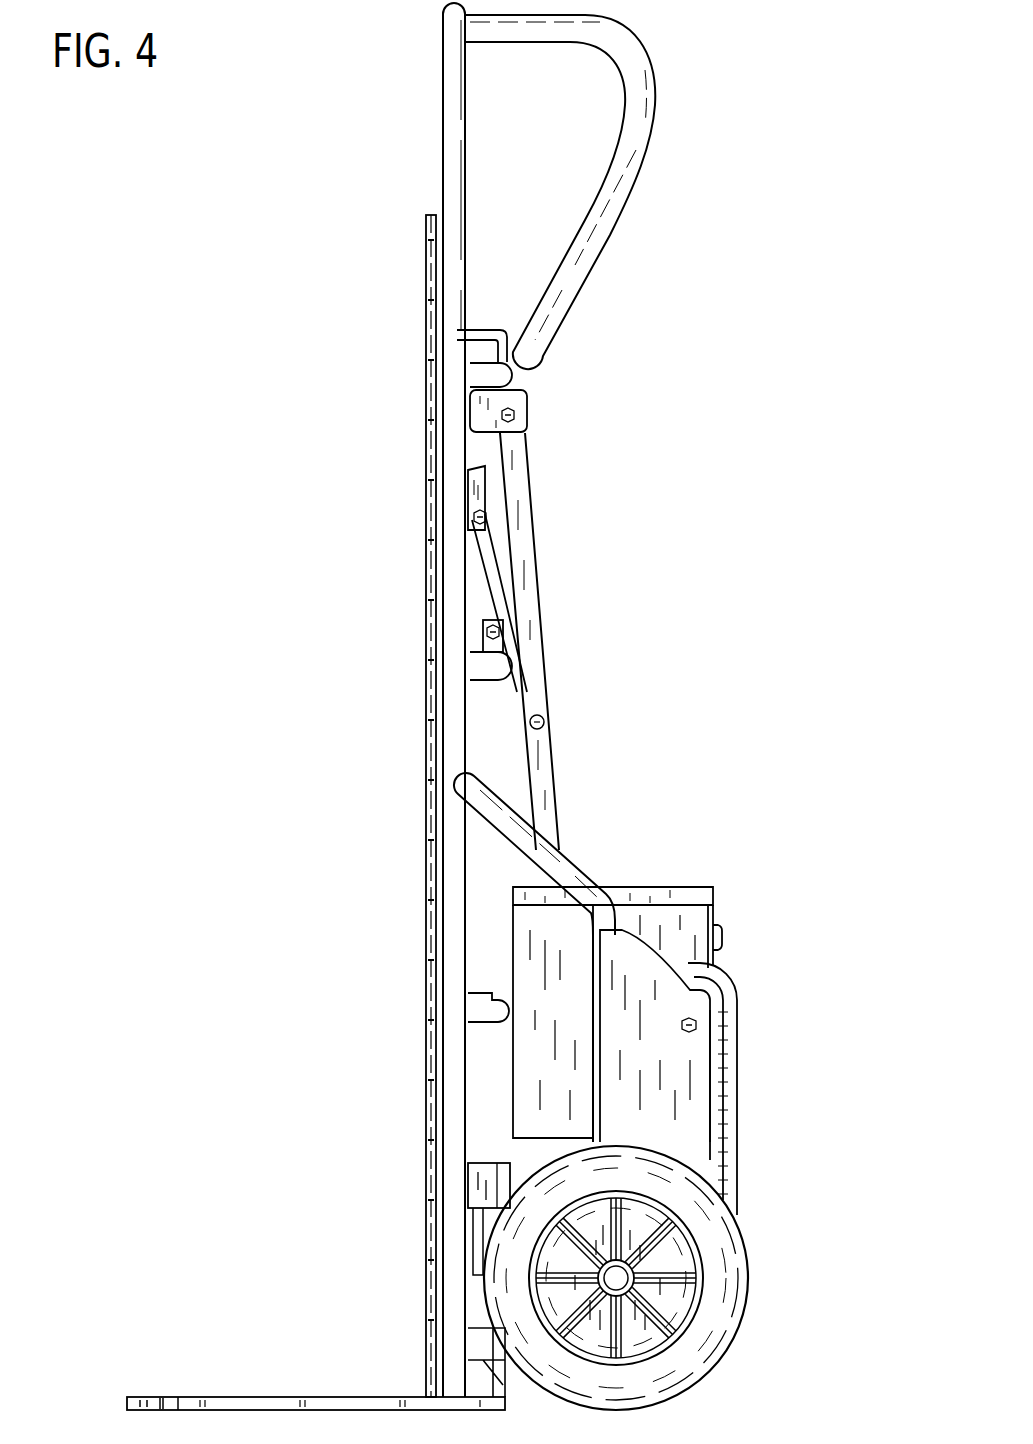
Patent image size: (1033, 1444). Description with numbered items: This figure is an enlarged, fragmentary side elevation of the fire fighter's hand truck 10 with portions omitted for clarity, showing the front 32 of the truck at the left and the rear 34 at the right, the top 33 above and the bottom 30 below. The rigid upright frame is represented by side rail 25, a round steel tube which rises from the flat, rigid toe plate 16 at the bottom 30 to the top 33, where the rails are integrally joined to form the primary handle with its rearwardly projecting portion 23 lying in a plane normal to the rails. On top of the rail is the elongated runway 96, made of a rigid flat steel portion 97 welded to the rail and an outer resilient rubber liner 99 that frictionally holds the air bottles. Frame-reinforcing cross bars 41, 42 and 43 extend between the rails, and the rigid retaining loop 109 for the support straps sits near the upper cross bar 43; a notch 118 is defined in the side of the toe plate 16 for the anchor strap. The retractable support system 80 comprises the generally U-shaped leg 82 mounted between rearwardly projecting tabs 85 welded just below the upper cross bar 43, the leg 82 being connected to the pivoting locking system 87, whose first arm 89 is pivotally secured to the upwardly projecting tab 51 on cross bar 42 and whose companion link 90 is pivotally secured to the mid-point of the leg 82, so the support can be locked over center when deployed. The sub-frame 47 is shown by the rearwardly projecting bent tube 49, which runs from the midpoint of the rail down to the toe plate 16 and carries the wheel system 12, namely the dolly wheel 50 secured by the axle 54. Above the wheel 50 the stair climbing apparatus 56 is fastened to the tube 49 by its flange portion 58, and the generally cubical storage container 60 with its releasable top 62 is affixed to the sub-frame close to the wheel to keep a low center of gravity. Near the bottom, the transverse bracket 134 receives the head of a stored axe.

The hand truck 10 is at (222, 182).
The wheel system 12 is at (761, 1221).
The toe plate 16 is at (230, 1397).
The rearwardly projecting portion 23 is at (672, 99).
The side rail 25 is at (458, 448).
The bottom 30 is at (306, 1284).
The front 32 is at (427, 45).
The top 33 is at (428, 82).
The rear 34 is at (756, 600).
The cross bar 41 is at (470, 1020).
The cross bar 42 is at (537, 683).
The upper cross bar 43 is at (514, 375).
The sub-frame 47 is at (642, 861).
The bent tube 49 is at (561, 867).
The dolly wheel 50 is at (718, 1339).
The upwardly projecting tab 51 is at (483, 640).
The axle 54 is at (634, 1275).
The stair climbing apparatus 56 is at (754, 1047).
The flange portion 58 is at (716, 1003).
The storage container 60 is at (742, 912).
The releasable top 62 is at (681, 885).
The retractable support system 80 is at (572, 632).
The leg 82 is at (546, 775).
The tab 85 is at (515, 410).
The locking system 87 is at (510, 517).
The first arm 89 is at (490, 613).
The link 90 is at (500, 596).
The runway 96 is at (423, 378).
The flat steel portion 97 is at (437, 300).
The rubber liner 99 is at (437, 482).
The retaining loop 109 is at (478, 332).
The notch 118 is at (150, 1393).
The transverse bracket 134 is at (488, 1192).